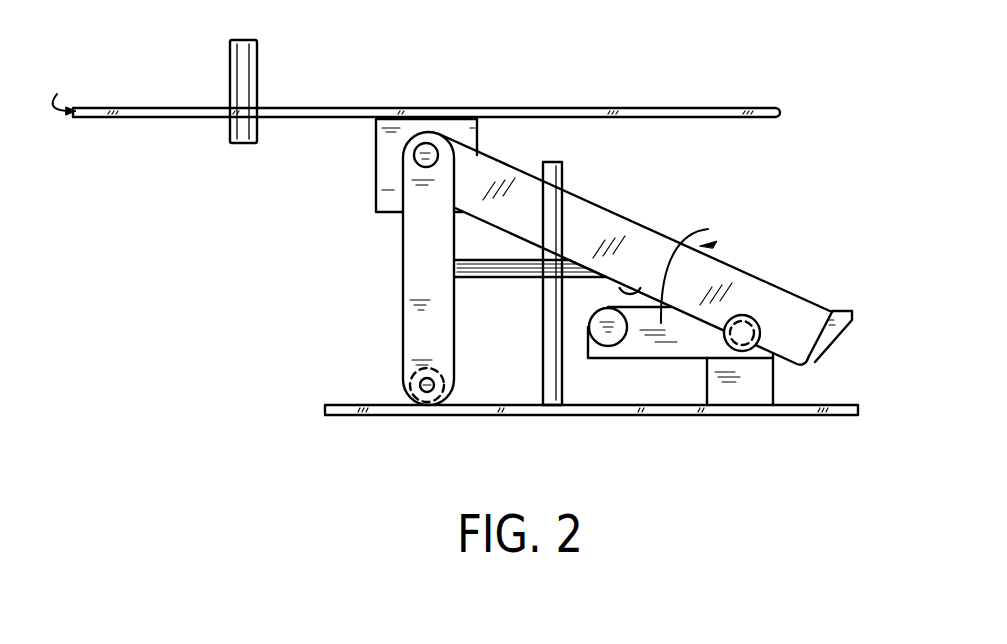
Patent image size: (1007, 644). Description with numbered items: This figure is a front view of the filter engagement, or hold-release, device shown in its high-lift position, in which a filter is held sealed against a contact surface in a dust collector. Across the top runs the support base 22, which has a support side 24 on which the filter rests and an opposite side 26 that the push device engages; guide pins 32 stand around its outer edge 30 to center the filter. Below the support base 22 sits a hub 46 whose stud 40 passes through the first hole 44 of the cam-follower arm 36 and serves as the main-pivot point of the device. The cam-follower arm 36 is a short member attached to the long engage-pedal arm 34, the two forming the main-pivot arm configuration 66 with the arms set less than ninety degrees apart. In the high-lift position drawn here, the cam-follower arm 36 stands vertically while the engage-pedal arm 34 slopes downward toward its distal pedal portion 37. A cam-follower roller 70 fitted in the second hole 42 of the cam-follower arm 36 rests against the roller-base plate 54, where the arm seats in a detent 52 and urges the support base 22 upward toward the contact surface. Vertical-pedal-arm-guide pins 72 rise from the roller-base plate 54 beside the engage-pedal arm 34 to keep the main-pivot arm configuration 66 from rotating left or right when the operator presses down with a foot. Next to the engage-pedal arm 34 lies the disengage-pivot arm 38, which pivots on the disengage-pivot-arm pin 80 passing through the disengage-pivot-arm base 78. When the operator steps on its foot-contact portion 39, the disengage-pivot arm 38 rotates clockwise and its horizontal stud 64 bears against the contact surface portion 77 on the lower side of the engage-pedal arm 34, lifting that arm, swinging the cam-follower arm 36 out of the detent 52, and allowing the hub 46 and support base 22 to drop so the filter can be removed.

The support base 22 is at (63, 92).
The support side 24 is at (150, 107).
The opposite side 26 is at (133, 117).
The outer edge 30 is at (180, 117).
The guide pins 32 is at (258, 43).
The engage-pedal arm 34 is at (582, 208).
The cam-follower arm 36 is at (420, 276).
The pedal portion 37 is at (803, 298).
The disengage-pivot arm 38 is at (652, 349).
The foot-contact portion 39 is at (838, 309).
The stud 40 is at (414, 148).
The second hole 42 is at (426, 395).
The first hole 44 is at (416, 163).
The hub 46 is at (382, 154).
The detent 52 is at (443, 405).
The roller-base plate 54 is at (347, 415).
The stud 64 is at (607, 346).
The main-pivot arm configuration 66 is at (486, 163).
The cam-follower roller 70 is at (414, 396).
The vertical-pedal-arm-guide pins 72 is at (556, 163).
The contact surface portion 77 is at (703, 268).
The disengage-pivot-arm base 78 is at (762, 380).
The disengage-pivot-arm pin 80 is at (745, 316).